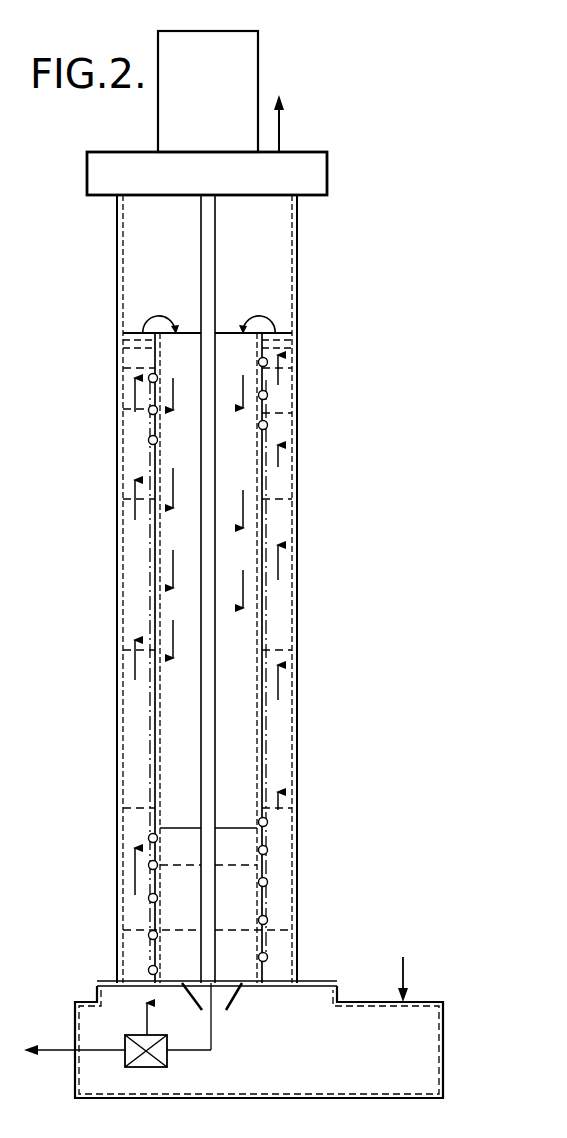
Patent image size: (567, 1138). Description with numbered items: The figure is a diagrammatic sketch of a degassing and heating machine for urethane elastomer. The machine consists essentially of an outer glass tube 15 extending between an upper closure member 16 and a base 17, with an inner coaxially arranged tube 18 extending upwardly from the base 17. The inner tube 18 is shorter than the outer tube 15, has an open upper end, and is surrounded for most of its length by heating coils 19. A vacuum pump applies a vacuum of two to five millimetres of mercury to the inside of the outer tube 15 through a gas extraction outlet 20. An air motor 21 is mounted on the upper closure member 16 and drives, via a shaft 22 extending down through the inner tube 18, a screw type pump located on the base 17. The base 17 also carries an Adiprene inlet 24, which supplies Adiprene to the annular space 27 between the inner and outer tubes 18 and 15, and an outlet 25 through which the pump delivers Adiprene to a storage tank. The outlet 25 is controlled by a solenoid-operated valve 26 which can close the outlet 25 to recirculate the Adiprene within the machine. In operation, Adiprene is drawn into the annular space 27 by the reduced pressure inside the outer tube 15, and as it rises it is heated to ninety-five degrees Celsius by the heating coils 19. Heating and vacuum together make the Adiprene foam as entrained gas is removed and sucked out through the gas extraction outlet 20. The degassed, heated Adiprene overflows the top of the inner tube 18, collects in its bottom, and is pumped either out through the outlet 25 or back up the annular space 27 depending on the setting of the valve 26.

The outer glass tube 15 is at (297, 368).
The upper closure member 16 is at (104, 172).
The base 17 is at (98, 985).
The inner tube 18 is at (259, 410).
The heating coils 19 is at (268, 823).
The gas extraction outlet 20 is at (283, 129).
The air motor 21 is at (240, 58).
The shaft 22 is at (201, 245).
The Adiprene inlet 24 is at (405, 970).
The outlet 25 is at (52, 1056).
The solenoid-operated valve 26 is at (170, 1060).
The annular space 27 is at (285, 455).